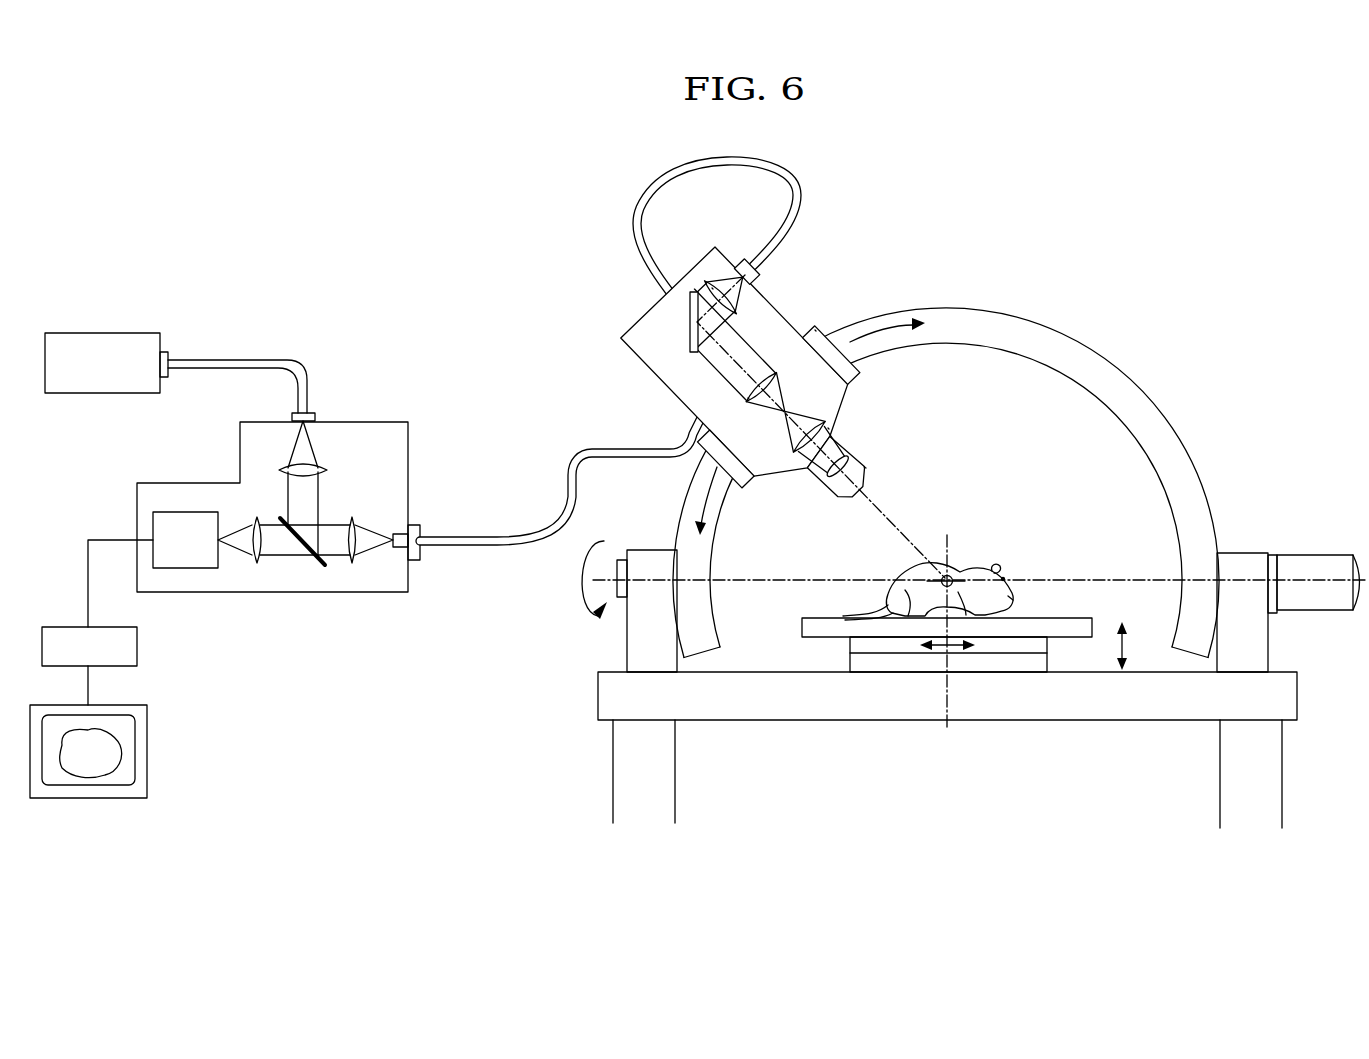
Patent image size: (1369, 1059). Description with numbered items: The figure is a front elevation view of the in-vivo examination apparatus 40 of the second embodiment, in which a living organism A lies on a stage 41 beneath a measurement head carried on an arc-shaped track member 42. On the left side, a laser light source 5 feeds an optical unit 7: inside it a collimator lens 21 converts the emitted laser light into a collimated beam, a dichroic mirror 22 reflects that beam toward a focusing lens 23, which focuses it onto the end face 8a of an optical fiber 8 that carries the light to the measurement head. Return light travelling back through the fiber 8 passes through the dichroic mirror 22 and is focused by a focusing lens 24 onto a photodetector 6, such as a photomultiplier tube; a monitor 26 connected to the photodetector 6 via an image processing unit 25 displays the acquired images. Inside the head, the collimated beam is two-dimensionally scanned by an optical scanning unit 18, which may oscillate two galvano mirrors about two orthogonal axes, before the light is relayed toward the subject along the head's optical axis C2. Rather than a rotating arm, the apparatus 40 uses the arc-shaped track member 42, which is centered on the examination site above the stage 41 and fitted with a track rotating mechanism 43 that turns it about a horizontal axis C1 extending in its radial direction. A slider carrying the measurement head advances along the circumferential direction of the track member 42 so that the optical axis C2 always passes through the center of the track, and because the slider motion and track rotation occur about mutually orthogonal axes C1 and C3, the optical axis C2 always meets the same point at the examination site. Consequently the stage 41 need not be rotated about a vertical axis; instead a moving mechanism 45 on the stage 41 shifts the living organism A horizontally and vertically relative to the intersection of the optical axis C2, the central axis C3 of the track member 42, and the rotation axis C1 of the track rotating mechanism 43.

The laser light source 5 is at (103, 343).
The photodetector 6 is at (177, 520).
The optical unit 7 is at (302, 338).
The optical fiber 8 is at (613, 452).
The end face of the optical fiber 8a is at (392, 531).
The optical scanning unit 18 is at (688, 330).
The collimator lens 21 is at (321, 468).
The dichroic mirror 22 is at (322, 566).
The focusing lens 23 is at (352, 562).
The focusing lens 24 is at (250, 517).
The image processing unit 25 is at (137, 652).
The monitor 26 is at (147, 752).
The in-vivo examination apparatus 40 is at (1066, 245).
The stage 41 is at (812, 620).
The arc-shaped track member 42 is at (1130, 412).
The track rotating mechanism 43 is at (1322, 530).
The moving mechanism 45 is at (830, 655).
The living organism A is at (1010, 576).
The horizontal axis C1 is at (1170, 580).
The optical axis C2 is at (897, 525).
The central axis C3 is at (948, 576).